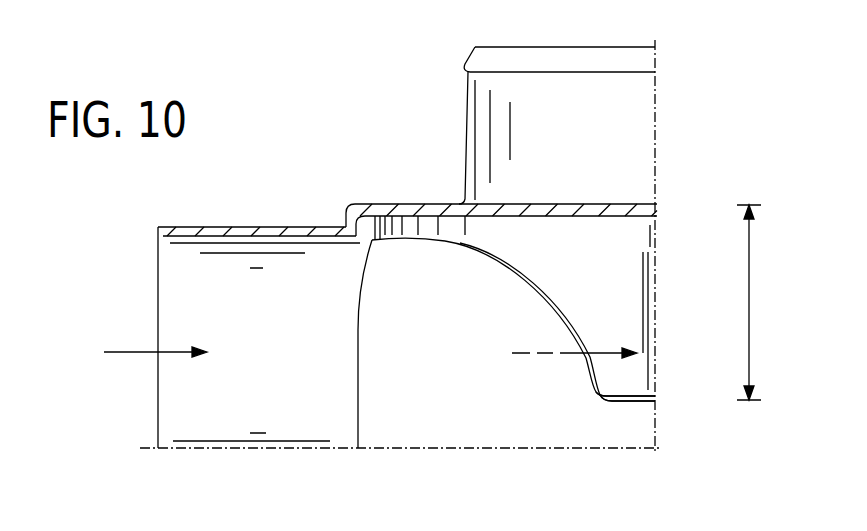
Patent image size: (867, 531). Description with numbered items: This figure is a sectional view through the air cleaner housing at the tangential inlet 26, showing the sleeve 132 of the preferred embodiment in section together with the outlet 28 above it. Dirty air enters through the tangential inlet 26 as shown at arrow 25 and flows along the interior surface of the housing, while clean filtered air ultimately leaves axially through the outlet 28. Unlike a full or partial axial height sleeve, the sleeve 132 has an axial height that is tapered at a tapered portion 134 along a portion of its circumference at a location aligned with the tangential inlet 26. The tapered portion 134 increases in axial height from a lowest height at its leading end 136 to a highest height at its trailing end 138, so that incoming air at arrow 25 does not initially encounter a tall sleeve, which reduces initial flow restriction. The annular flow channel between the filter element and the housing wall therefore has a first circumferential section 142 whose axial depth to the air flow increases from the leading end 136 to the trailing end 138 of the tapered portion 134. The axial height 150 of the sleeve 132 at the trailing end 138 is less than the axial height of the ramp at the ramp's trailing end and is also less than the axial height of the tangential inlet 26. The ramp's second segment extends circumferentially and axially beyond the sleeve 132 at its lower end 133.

The arrow 25 is at (132, 351).
The tangential inlet 26 is at (166, 238).
The outlet 28 is at (512, 46).
The sleeve 132 is at (603, 239).
The lower end 133 is at (630, 402).
The tapered portion 134 is at (540, 284).
The leading end 136 is at (503, 240).
The trailing end 138 is at (600, 383).
The first circumferential section 142 is at (628, 307).
The axial height 150 is at (752, 323).